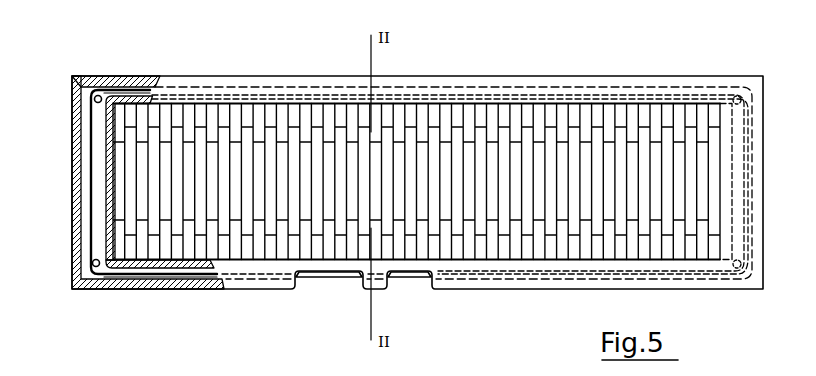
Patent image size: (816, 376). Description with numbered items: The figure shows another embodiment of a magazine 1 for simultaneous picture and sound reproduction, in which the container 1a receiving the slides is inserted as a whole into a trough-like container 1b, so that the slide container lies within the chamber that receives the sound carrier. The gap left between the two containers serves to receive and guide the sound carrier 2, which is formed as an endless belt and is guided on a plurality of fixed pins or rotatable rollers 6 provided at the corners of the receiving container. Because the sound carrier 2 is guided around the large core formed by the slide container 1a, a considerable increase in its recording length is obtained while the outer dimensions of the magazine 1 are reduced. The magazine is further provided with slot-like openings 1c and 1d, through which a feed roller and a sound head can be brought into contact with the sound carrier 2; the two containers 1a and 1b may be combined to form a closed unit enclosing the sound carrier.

The magazine 1 is at (502, 66).
The container receiving the slides 1a is at (152, 85).
The trough-like container 1b is at (135, 269).
The slot-like opening 1c is at (326, 282).
The slot-like opening 1d is at (408, 285).
The sound carrier 2 is at (90, 182).
The fixed pins or rotatable rollers 6 is at (98, 95).